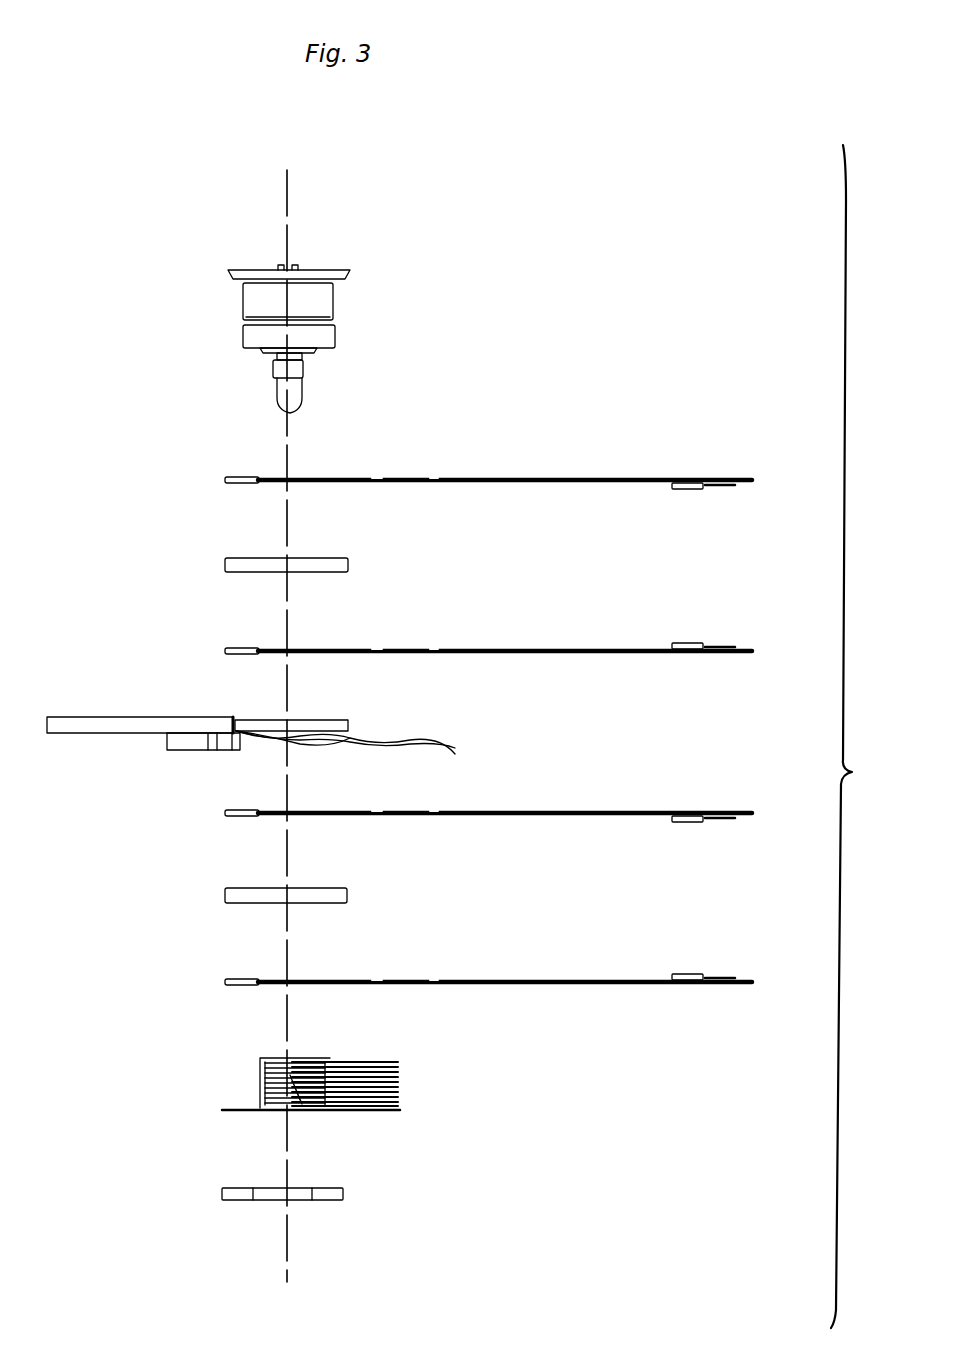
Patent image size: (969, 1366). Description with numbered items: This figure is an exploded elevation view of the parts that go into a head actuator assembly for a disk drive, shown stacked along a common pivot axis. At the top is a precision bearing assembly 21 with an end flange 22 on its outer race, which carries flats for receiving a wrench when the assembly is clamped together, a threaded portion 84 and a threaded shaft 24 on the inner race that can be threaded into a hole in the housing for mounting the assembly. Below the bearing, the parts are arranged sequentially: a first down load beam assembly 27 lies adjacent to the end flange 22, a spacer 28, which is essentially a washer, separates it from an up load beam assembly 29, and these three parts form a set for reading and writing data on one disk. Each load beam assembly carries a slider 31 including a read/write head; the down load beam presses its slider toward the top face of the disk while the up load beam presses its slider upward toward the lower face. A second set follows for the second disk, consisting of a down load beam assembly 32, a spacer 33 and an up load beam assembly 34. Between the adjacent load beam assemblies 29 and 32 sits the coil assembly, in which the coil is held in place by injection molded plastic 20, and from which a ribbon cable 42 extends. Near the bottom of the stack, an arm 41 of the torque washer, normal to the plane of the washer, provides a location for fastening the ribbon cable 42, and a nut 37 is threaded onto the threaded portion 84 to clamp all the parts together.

The injection molded plastic 20 is at (117, 716).
The bearing assembly 21 is at (334, 297).
The end flange 22 is at (318, 276).
The threaded shaft 24 is at (305, 372).
The down load beam assembly 27 is at (577, 478).
The spacer 28 is at (349, 566).
The up load beam assembly 29 is at (572, 649).
The slider 31 is at (684, 490).
The down load beam assembly 32 is at (570, 811).
The spacer 33 is at (348, 895).
The up load beam assembly 34 is at (568, 980).
The nut 37 is at (345, 1194).
The arm 41 is at (258, 1080).
The ribbon cable 42 is at (400, 1080).
The threaded portion 84 is at (336, 336).